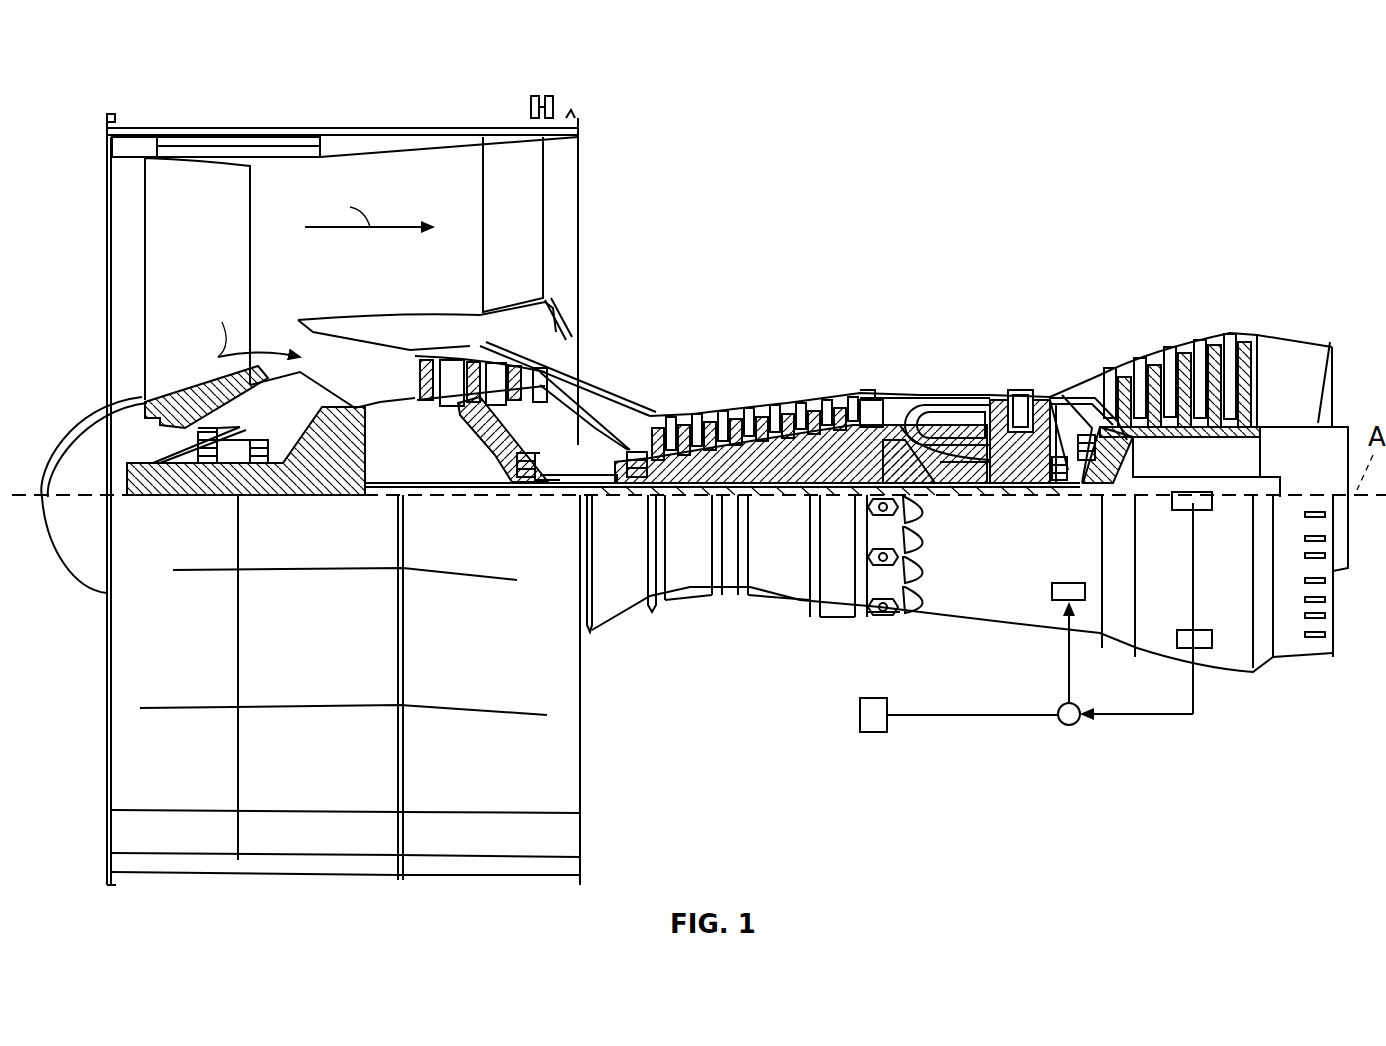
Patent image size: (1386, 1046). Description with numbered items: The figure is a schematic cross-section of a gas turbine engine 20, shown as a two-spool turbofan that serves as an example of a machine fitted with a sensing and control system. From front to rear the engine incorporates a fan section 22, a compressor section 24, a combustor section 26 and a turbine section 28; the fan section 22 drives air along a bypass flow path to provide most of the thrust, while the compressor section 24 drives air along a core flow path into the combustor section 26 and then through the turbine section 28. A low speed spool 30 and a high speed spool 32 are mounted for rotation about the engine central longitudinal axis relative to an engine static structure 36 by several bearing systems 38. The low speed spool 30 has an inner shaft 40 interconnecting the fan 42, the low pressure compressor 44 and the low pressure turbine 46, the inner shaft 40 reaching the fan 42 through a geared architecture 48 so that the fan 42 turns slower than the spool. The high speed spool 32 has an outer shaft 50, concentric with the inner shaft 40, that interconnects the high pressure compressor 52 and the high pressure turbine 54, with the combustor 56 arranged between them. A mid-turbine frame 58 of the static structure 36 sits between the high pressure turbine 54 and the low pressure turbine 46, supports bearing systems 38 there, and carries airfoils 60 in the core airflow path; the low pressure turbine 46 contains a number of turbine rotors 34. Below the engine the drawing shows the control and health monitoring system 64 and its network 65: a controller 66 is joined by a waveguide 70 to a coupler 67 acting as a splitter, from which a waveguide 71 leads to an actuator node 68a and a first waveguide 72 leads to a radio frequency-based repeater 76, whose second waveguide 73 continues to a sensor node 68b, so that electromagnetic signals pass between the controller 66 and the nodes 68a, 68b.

The gas turbine engine 20 is at (1155, 165).
The fan section 22 is at (103, 116).
The compressor section 24 is at (770, 353).
The combustor section 26 is at (936, 355).
The turbine section 28 is at (1111, 285).
The low speed spool 30 is at (799, 500).
The high speed spool 32 is at (853, 447).
The turbine rotors 34 is at (1130, 443).
The engine static structure 36 is at (842, 615).
The bearing systems 38 is at (207, 463).
The inner shaft 40 is at (593, 495).
The fan 42 is at (193, 254).
The low pressure compressor 44 is at (497, 377).
The low pressure turbine 46 is at (1187, 352).
The geared architecture 48 is at (347, 463).
The outer shaft 50 is at (967, 470).
The high pressure compressor 52 is at (763, 467).
The high pressure turbine 54 is at (1017, 390).
The combustor 56 is at (945, 413).
The mid-turbine frame 58 is at (1073, 378).
The airfoils 60 is at (1067, 407).
The control and health monitoring system 64 is at (1135, 746).
The network 65 is at (1258, 763).
The controller 66 is at (866, 715).
The coupler 67 is at (1071, 726).
The actuator node 68a is at (1050, 590).
The sensor node 68b is at (1200, 512).
The waveguide 70 is at (915, 716).
The waveguide 71 is at (1067, 682).
The first waveguide 72 is at (1195, 714).
The second waveguide 73 is at (1192, 580).
The radio frequency-based repeater 76 is at (1205, 650).